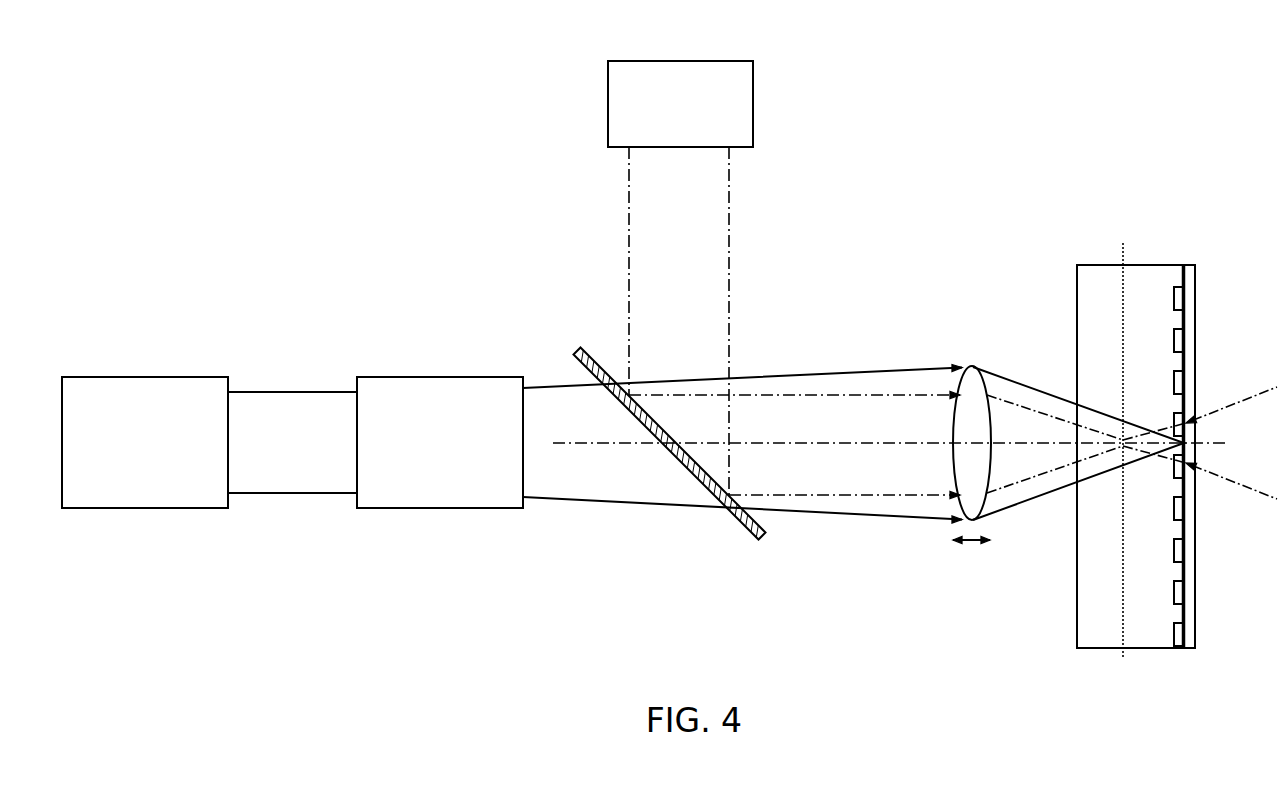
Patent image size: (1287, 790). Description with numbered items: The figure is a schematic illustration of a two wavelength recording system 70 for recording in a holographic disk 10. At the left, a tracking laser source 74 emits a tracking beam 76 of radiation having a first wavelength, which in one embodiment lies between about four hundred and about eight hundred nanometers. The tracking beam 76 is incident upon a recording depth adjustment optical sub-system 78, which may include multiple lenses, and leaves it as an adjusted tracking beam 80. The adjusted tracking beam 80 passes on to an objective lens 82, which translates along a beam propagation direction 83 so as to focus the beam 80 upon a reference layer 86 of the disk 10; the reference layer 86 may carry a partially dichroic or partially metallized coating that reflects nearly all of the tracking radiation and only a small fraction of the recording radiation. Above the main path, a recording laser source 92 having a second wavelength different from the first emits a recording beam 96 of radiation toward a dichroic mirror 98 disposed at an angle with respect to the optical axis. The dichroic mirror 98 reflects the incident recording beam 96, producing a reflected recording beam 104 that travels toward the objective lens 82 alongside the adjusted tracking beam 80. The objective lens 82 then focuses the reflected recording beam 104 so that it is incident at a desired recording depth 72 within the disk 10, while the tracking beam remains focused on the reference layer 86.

The two wavelength recording system 70 is at (1175, 57).
The tracking laser source 74 is at (143, 510).
The tracking beam 76 is at (300, 455).
The recording depth adjustment optical sub-system 78 is at (440, 510).
The adjusted tracking beam 80 is at (627, 505).
The dichroic mirror 98 is at (756, 550).
The recording laser source 92 is at (753, 100).
The recording beam 96 is at (729, 205).
The reflected recording beam 104 is at (843, 395).
The objective lens 82 is at (968, 362).
The beam propagation direction 83 is at (972, 545).
The recording depth 72 is at (1100, 265).
The holographic disk 10 is at (1097, 650).
The reference layer 86 is at (1176, 659).